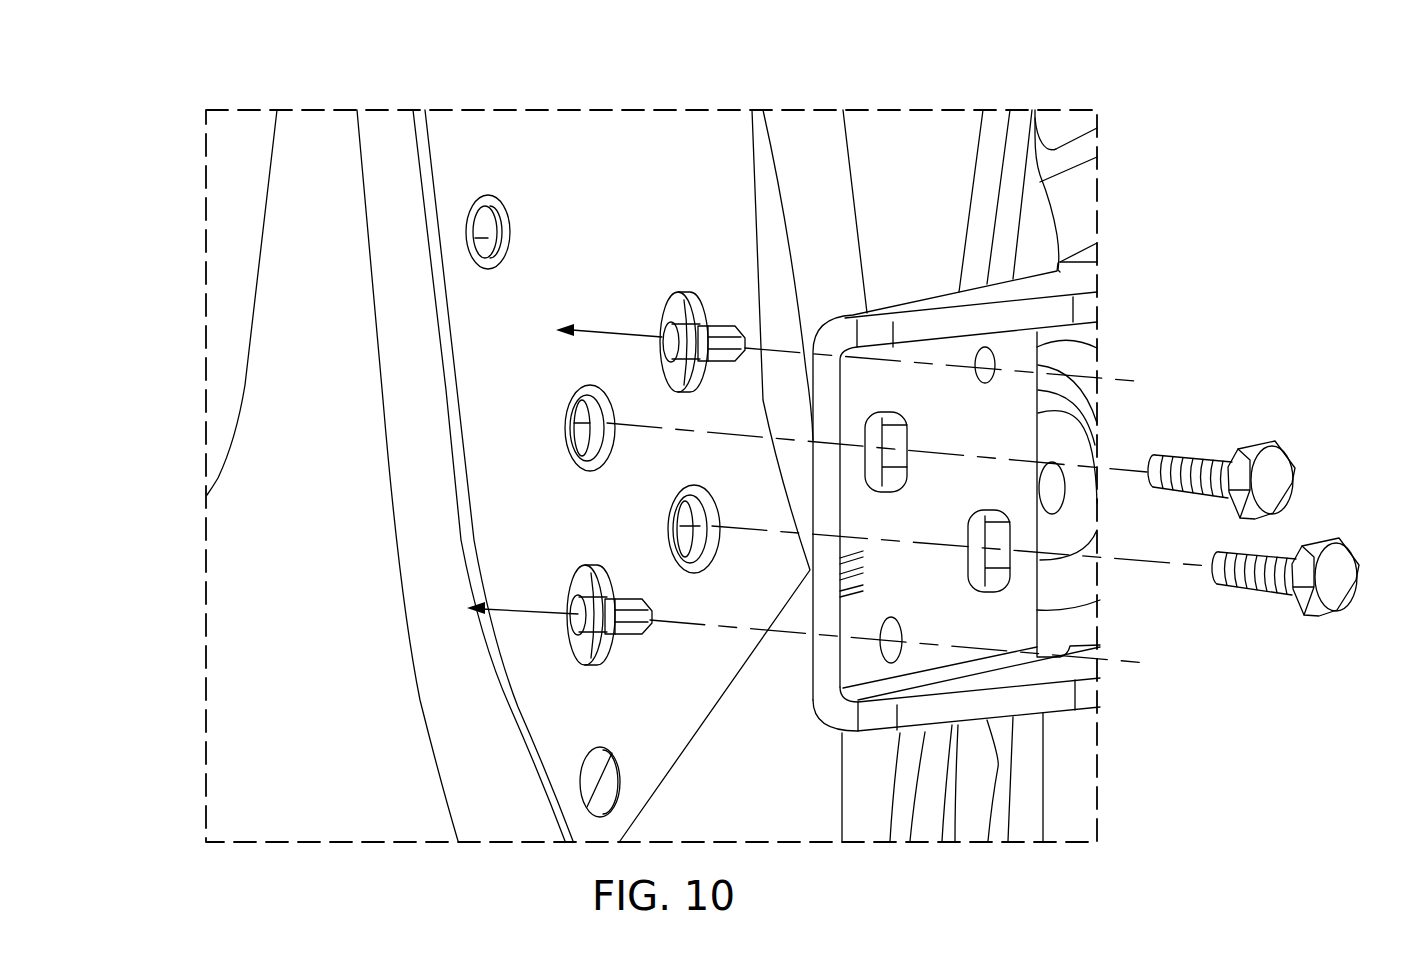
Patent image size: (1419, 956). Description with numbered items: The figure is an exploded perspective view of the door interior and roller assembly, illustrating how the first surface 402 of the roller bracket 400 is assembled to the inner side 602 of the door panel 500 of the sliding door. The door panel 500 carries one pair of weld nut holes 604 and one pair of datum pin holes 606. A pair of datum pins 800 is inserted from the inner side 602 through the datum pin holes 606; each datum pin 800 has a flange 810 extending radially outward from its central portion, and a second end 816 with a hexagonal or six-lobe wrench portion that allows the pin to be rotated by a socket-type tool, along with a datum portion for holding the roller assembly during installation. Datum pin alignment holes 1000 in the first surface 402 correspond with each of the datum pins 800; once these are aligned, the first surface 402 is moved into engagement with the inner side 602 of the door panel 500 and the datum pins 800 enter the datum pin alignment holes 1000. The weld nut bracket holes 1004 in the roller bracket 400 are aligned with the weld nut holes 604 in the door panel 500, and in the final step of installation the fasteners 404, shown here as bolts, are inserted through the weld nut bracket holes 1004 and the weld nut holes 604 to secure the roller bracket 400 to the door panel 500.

The door panel 500 is at (321, 102).
The inner side of the door panel 602 is at (333, 422).
The weld nut holes 604 is at (591, 400).
The datum pin holes 606 is at (692, 287).
The datum pins 800 is at (720, 310).
The flange 810 is at (679, 312).
The second end of the datum pin 816 is at (745, 327).
The roller bracket 400 is at (994, 497).
The first surface of the roller bracket 402 is at (990, 408).
The fasteners 404 is at (1293, 492).
The datum pin alignment holes 1000 is at (990, 352).
The weld nut bracket holes 1004 is at (893, 410).